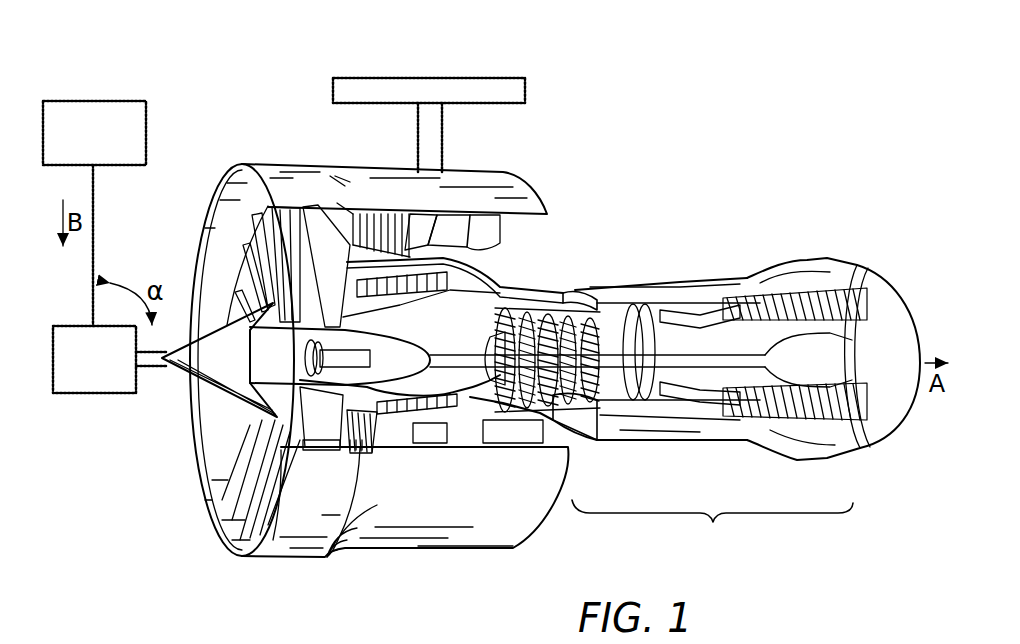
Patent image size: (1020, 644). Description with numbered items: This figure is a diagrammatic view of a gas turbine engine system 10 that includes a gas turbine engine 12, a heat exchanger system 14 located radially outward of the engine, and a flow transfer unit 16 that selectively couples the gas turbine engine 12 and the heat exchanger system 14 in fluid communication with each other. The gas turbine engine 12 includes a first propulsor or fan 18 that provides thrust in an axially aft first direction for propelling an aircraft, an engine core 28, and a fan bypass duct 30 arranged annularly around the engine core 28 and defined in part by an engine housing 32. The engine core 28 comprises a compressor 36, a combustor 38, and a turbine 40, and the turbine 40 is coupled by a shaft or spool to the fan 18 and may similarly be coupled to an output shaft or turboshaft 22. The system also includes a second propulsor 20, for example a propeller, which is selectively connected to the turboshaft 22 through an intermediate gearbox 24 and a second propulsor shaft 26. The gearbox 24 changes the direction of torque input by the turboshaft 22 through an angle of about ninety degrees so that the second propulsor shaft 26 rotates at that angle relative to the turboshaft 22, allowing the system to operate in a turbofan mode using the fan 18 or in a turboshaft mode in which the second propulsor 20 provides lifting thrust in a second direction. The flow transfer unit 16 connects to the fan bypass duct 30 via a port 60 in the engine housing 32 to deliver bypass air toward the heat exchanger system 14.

The gas turbine engine system 10 is at (162, 96).
The gas turbine engine 12 is at (260, 594).
The heat exchanger system 14 is at (378, 66).
The flow transfer unit 16 is at (500, 158).
The fan 18 is at (258, 445).
The second propulsor 20 is at (90, 100).
The turboshaft 22 is at (152, 373).
The gearbox 24 is at (90, 388).
The second propulsor shaft 26 is at (97, 250).
The engine core 28 is at (712, 526).
The fan bypass duct 30 is at (540, 232).
The engine housing 32 is at (353, 175).
The compressor 36 is at (549, 283).
The combustor 38 is at (672, 268).
The turbine 40 is at (794, 232).
The port 60 is at (418, 156).